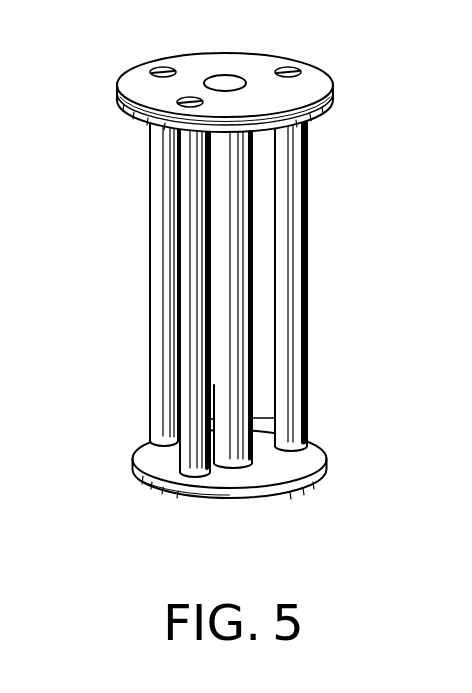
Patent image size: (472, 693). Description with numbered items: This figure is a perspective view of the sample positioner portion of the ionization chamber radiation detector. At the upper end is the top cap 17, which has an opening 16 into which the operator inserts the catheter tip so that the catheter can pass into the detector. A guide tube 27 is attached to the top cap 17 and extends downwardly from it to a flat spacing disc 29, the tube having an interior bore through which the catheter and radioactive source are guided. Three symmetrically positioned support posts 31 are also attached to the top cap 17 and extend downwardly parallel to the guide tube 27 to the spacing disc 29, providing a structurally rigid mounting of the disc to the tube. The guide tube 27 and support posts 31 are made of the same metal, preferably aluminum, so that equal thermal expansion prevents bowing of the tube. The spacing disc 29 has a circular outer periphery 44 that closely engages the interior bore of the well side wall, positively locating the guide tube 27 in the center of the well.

The opening 16 is at (218, 83).
The top cap 17 is at (307, 90).
The support posts 31 is at (183, 371).
The guide tube 27 is at (247, 295).
The spacing disc 29 is at (147, 458).
The outer periphery 44 is at (132, 458).